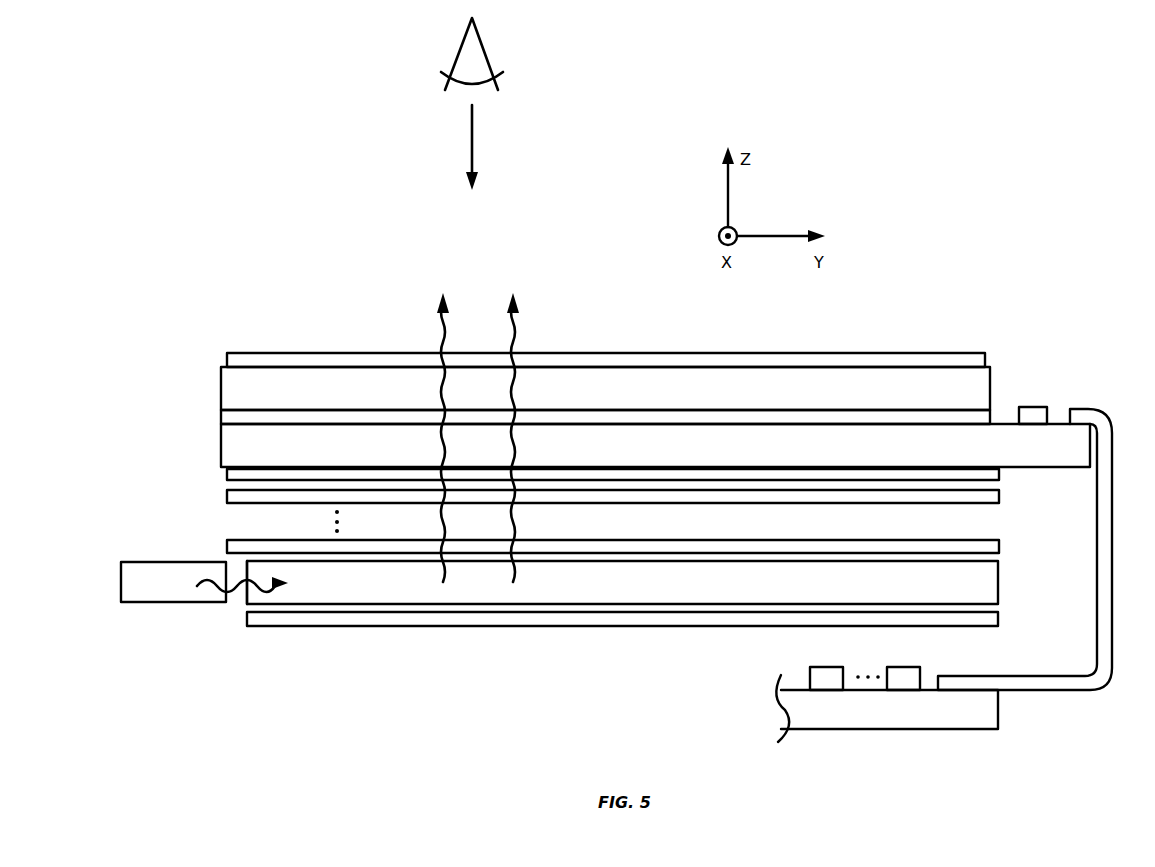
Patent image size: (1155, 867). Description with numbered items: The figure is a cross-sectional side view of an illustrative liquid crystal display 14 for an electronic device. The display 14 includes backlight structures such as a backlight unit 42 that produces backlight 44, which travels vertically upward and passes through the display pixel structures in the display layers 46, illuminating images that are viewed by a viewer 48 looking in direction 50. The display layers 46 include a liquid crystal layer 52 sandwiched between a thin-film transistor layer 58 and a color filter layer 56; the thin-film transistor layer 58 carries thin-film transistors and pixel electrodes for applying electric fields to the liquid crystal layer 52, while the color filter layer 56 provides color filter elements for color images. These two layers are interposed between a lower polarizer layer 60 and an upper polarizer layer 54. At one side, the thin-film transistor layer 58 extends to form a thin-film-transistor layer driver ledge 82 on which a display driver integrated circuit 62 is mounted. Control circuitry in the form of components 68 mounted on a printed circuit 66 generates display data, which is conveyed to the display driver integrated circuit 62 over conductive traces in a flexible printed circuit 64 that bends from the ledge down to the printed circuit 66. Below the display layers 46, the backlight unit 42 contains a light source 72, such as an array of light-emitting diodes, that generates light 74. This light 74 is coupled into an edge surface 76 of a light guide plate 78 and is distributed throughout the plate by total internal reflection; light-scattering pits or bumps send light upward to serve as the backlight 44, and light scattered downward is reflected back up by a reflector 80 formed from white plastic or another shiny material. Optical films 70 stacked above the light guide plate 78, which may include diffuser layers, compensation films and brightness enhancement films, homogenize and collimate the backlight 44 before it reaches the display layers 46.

The display 14 is at (1026, 152).
The backlight unit 42 is at (1013, 487).
The backlight 44 is at (500, 333).
The display layers 46 is at (175, 352).
The viewer 48 is at (485, 50).
The direction 50 is at (475, 152).
The liquid crystal layer 52 is at (295, 415).
The upper polarizer layer 54 is at (247, 360).
The color filter layer 56 is at (228, 386).
The thin-film transistor layer 58 is at (228, 436).
The lower polarizer layer 60 is at (228, 472).
The display driver integrated circuit 62 is at (1033, 408).
The flexible printed circuit 64 is at (1112, 478).
The printed circuit 66 is at (862, 715).
The components 68 is at (898, 670).
The optical films 70 is at (227, 545).
The light source 72 is at (130, 583).
The light 74 is at (212, 582).
The edge surface 76 is at (243, 592).
The light guide plate 78 is at (330, 594).
The reflector 80 is at (413, 622).
The thin-film-transistor layer driver ledge 82 is at (1112, 378).